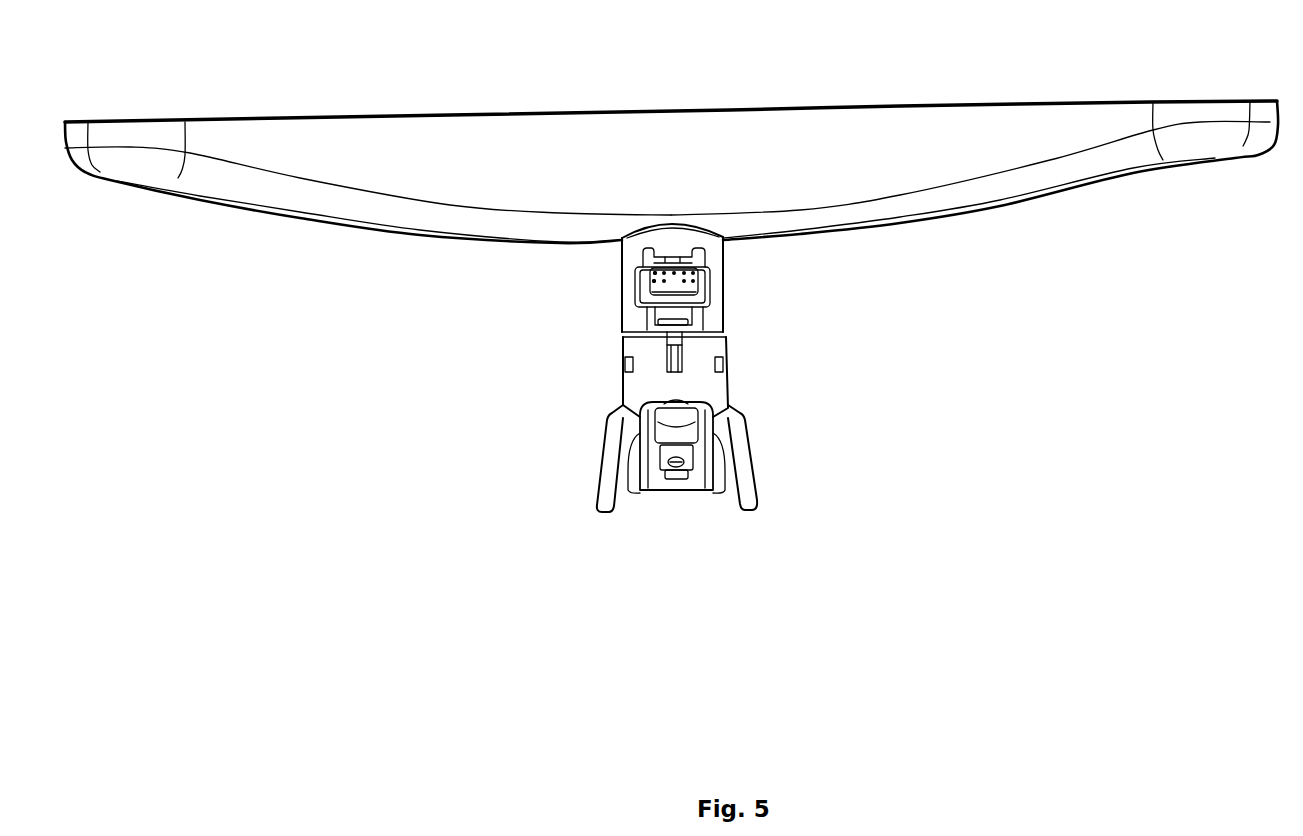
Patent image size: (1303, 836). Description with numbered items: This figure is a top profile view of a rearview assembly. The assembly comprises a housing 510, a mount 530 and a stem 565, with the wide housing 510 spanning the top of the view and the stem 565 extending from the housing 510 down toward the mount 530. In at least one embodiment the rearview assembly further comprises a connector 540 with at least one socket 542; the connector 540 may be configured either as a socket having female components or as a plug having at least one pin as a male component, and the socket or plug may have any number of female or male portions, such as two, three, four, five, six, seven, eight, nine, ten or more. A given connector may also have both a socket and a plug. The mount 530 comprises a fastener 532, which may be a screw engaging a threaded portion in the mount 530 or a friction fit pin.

The housing 510 is at (755, 146).
The stem 565 is at (712, 248).
The connector 540 is at (687, 287).
The socket 542 is at (653, 281).
The mount 530 is at (720, 422).
The fastener 532 is at (677, 479).